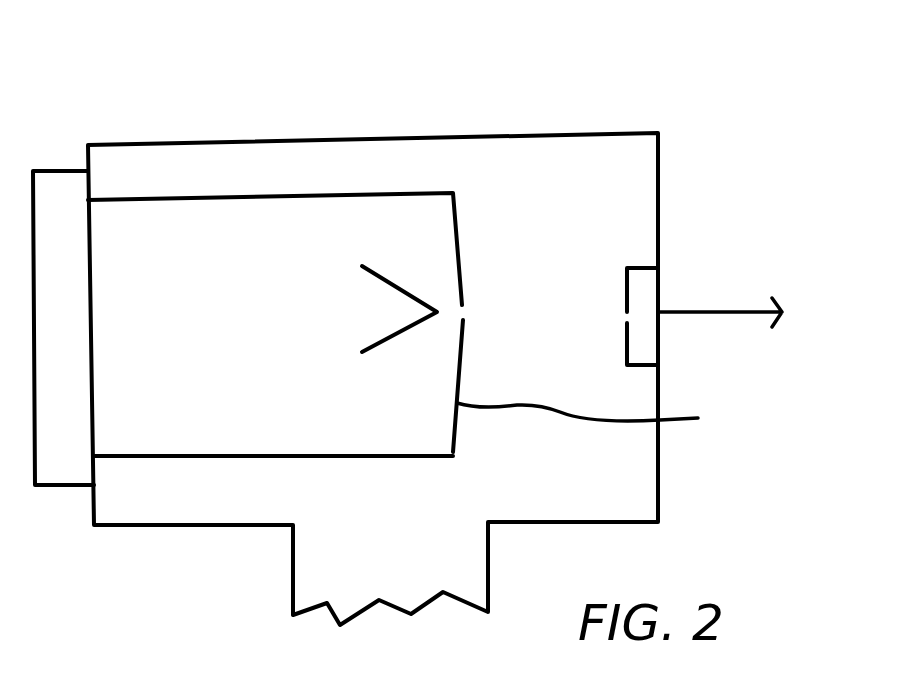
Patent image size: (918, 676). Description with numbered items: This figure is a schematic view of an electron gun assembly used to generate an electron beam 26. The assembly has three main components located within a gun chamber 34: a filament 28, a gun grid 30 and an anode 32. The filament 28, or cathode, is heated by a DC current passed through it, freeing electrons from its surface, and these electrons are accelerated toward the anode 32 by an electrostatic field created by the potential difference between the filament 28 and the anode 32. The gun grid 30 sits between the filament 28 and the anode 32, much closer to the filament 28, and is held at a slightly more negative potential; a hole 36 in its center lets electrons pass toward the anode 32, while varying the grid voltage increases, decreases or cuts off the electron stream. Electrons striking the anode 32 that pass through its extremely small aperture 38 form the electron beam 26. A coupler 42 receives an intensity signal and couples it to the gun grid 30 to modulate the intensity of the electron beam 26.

The electron beam 26 is at (758, 308).
The filament 28 is at (393, 343).
The gun grid 30 is at (611, 424).
The anode 32 is at (643, 280).
The gun chamber 34 is at (569, 155).
The hole 36 is at (465, 307).
The aperture 38 is at (628, 313).
The coupler 42 is at (53, 193).